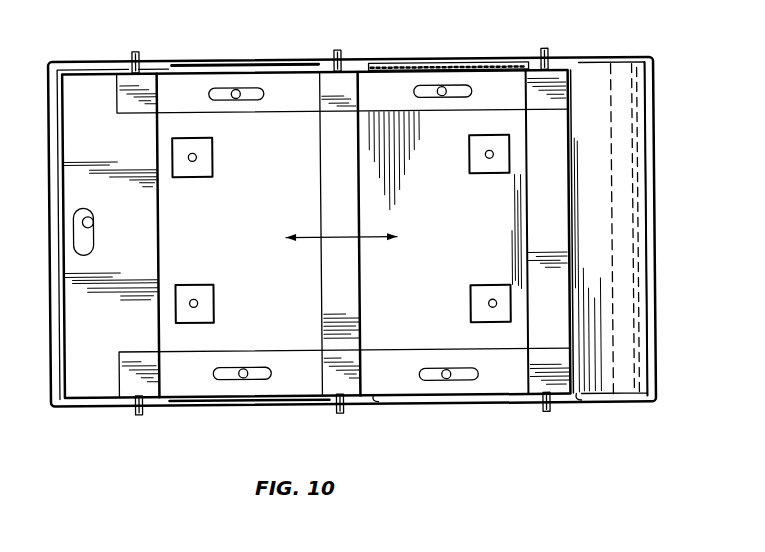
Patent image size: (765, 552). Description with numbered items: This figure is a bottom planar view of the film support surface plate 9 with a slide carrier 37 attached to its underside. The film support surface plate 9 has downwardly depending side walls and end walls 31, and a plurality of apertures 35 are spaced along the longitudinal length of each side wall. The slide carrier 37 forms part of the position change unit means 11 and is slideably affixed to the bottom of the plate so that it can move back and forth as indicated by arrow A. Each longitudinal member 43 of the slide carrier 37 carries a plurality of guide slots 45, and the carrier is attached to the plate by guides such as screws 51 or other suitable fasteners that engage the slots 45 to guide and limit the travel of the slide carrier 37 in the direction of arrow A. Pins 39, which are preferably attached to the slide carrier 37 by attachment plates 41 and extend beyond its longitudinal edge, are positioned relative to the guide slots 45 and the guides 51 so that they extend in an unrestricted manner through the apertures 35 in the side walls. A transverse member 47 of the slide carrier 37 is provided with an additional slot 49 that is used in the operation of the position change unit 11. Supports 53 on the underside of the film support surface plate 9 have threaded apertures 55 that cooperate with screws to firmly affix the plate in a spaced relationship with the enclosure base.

The film support surface plate 9 is at (602, 259).
The position change unit means 11 is at (348, 50).
The end walls 31 is at (55, 382).
The apertures 35 is at (172, 64).
The slide carrier 37 is at (325, 188).
The pins 39 is at (136, 52).
The attachment plates 41 is at (564, 84).
The longitudinal member 43 is at (284, 82).
The guide slots 45 is at (262, 91).
The transverse member 47 is at (152, 221).
The slot 49 is at (94, 222).
The screws 51 is at (238, 89).
The supports 53 is at (214, 154).
The threaded apertures 55 is at (198, 161).
The arrow A is at (367, 237).